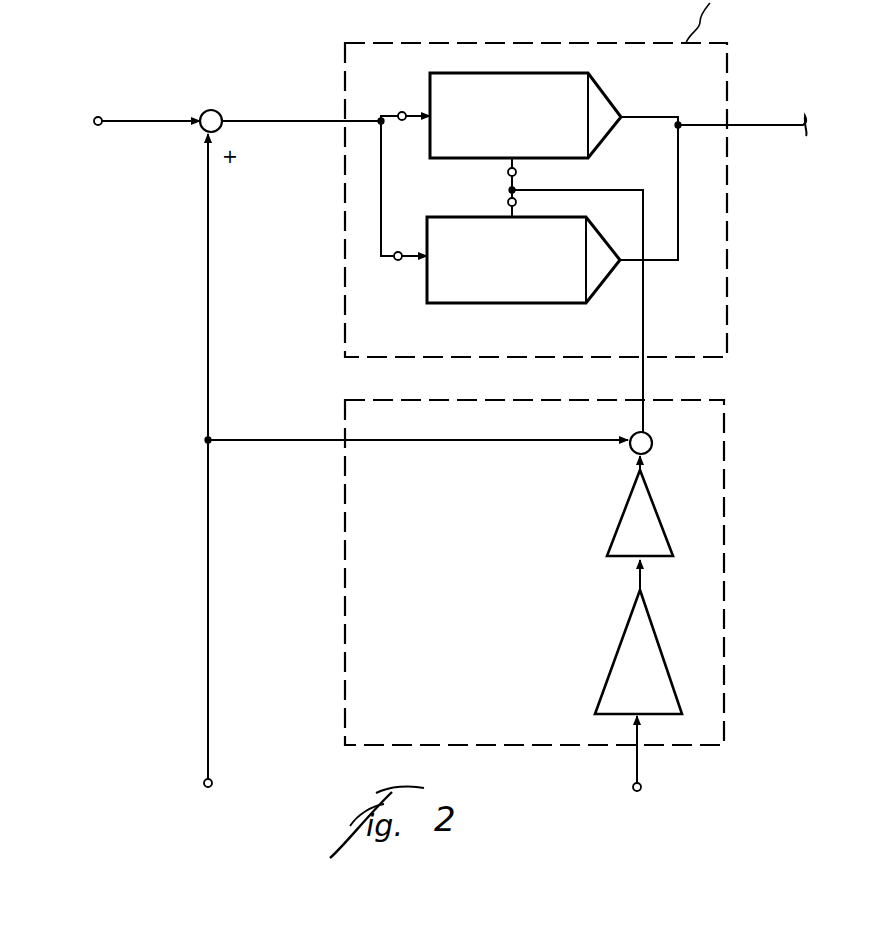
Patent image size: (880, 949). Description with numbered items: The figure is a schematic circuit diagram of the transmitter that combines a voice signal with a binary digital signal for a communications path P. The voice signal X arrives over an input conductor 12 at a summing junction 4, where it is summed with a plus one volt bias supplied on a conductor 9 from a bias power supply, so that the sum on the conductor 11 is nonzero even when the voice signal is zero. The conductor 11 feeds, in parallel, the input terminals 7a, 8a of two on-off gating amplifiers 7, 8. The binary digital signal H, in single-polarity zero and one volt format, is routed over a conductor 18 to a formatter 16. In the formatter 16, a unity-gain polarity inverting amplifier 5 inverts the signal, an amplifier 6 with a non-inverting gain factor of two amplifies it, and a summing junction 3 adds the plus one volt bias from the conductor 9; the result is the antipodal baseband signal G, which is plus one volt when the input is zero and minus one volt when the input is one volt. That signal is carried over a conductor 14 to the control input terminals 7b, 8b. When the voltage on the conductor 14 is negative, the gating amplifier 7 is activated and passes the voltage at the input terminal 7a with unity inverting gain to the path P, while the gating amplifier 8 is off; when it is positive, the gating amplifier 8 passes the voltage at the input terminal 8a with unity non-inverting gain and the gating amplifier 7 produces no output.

The input conductor 12 is at (140, 120).
The summing junction 4 is at (213, 110).
The conductor 11 is at (278, 122).
The input terminal 7a is at (399, 112).
The gating amplifier 7 is at (580, 75).
The control input terminal 7b is at (507, 176).
The control terminal 8b is at (507, 203).
The input terminal 8a is at (396, 261).
The gating amplifier 8 is at (576, 303).
The communications path P is at (760, 125).
The conductor 14 is at (645, 394).
The summing junction 3 is at (653, 440).
The amplifier 6 is at (628, 500).
The formatter 16 is at (726, 535).
The inverting amplifier 5 is at (603, 688).
The conductor 9 is at (208, 571).
The conductor 18 is at (637, 765).